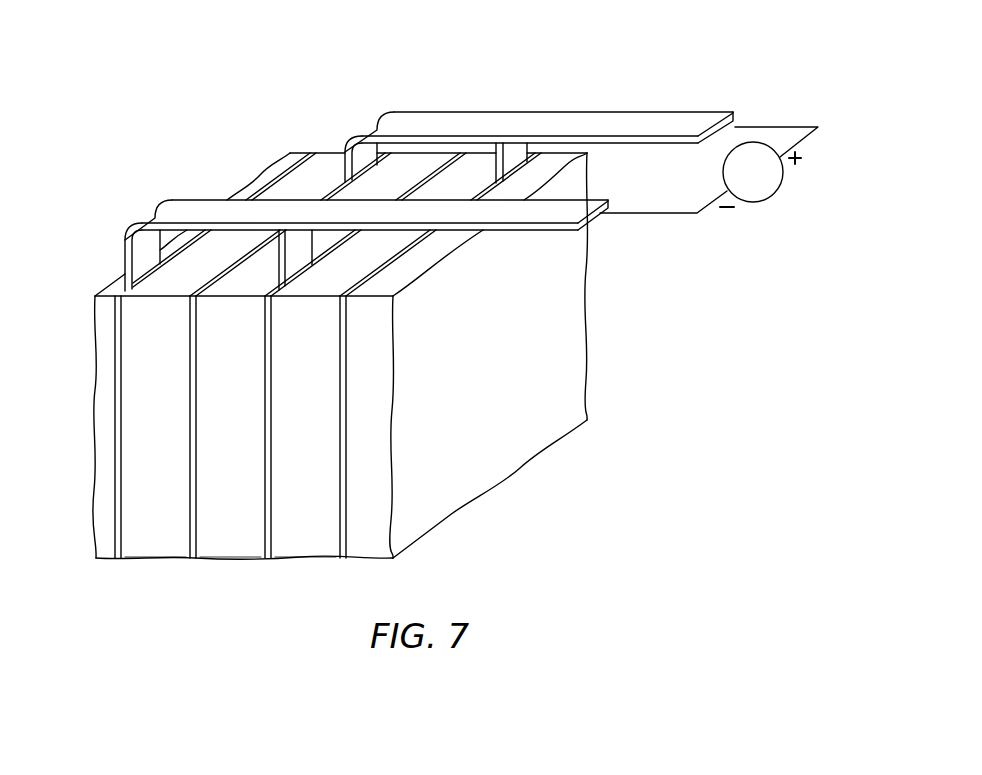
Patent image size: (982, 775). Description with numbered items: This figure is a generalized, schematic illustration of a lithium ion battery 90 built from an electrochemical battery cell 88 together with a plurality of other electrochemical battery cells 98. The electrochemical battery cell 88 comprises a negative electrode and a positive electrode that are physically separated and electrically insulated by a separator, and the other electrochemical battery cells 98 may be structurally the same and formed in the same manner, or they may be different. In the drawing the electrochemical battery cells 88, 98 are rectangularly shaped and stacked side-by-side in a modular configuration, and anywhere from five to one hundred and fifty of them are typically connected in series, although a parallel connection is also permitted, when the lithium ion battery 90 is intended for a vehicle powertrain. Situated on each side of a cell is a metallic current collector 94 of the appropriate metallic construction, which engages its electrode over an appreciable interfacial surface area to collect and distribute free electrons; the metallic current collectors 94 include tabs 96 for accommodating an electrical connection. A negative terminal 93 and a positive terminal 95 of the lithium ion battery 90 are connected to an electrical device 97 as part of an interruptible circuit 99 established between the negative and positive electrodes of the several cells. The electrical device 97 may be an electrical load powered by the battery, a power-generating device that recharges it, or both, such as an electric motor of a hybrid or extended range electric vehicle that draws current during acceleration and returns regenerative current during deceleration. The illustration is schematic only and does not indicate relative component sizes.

The lithium ion battery 90 is at (146, 122).
The negative terminal 93 is at (200, 212).
The metallic current collector 94 is at (117, 367).
The positive terminal 95 is at (598, 121).
The tab 96 is at (338, 157).
The electrical device 97 is at (757, 177).
The electrochemical battery cells 98 is at (236, 533).
The electrochemical battery cell 88 is at (160, 533).
The interruptible circuit 99 is at (696, 228).